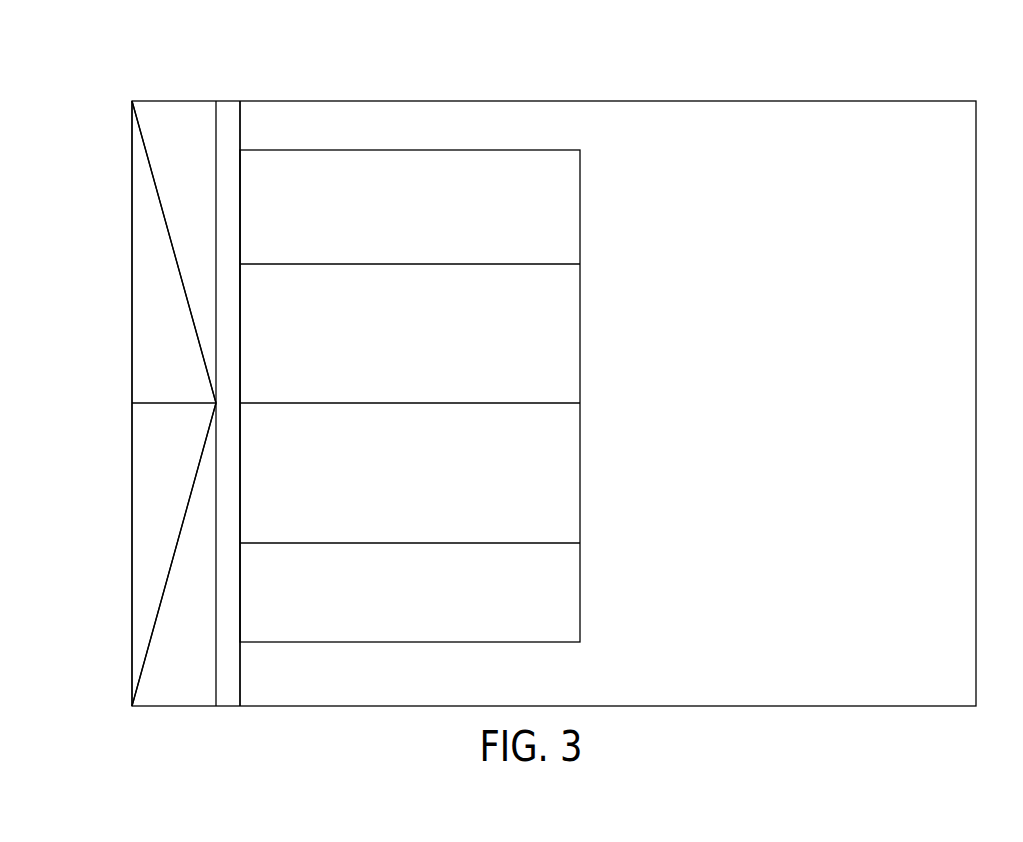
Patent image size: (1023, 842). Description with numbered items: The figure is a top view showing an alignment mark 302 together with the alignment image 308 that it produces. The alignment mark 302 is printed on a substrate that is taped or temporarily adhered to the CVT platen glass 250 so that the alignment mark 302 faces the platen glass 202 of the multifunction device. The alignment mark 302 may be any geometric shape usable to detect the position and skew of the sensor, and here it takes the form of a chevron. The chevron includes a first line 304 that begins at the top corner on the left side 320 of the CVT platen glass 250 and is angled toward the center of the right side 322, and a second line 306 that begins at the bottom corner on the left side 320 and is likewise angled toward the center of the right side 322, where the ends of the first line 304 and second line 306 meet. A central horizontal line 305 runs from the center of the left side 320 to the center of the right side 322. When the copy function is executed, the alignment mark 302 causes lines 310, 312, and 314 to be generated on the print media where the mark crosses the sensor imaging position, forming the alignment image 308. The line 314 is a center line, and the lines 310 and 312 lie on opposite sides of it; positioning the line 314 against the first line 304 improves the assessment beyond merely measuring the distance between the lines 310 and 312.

The platen glass 202 is at (660, 101).
The CVT platen glass 250 is at (228, 115).
The alignment mark 302 is at (168, 116).
The first line 304 is at (180, 283).
The central horizontal line 305 is at (168, 405).
The second line 306 is at (172, 557).
The alignment image 308 is at (406, 170).
The line 310 is at (452, 264).
The line 312 is at (452, 543).
The center line 314 is at (452, 403).
The left side 320 is at (132, 168).
The right side 322 is at (240, 125).